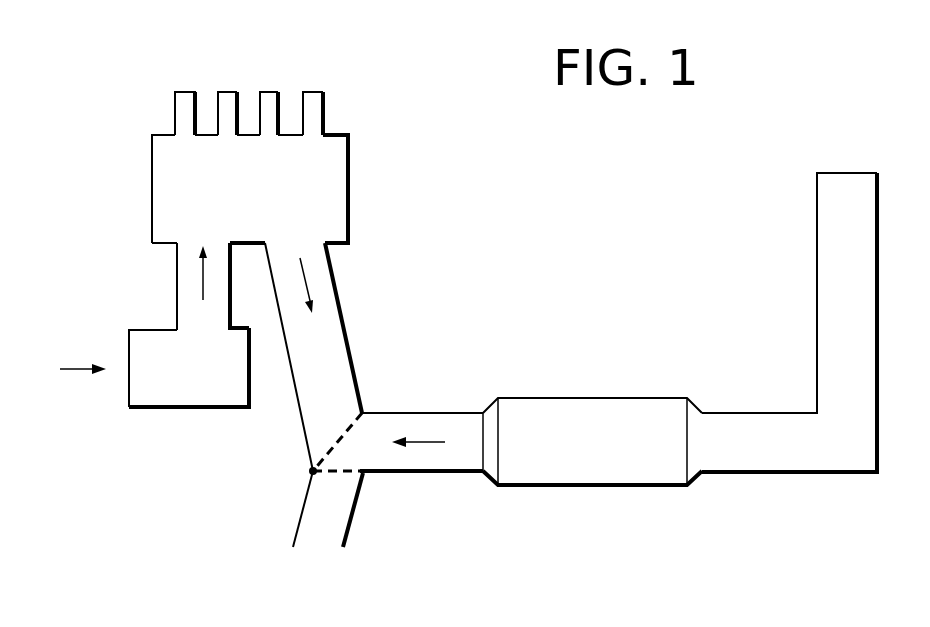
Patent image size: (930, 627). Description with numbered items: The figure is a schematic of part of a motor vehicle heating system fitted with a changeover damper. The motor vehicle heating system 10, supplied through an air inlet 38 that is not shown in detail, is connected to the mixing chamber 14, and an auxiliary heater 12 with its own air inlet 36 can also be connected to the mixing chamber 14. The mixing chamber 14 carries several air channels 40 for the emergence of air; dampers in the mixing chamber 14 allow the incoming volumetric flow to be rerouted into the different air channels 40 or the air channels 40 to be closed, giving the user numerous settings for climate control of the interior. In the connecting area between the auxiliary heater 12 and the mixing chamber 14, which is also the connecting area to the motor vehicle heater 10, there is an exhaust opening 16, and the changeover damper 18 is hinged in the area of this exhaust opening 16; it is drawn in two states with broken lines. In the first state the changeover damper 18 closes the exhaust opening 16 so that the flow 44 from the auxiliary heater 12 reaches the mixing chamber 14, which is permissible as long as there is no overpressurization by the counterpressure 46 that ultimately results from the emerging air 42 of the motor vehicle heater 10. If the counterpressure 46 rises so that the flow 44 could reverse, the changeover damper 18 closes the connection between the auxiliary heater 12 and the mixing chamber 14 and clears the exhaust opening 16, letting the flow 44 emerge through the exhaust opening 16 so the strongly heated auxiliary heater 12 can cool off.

The motor vehicle heating system 10 is at (158, 390).
The auxiliary heater 12 is at (580, 455).
The mixing chamber 14 is at (158, 180).
The exhaust opening 16 is at (319, 532).
The changeover damper 18 is at (340, 435).
The air inlet 36 is at (828, 227).
The air inlet 38 is at (73, 370).
The air channels 40 is at (183, 100).
The emerging air 42 is at (203, 280).
The flow 44 is at (425, 445).
The counterpressure 46 is at (305, 278).